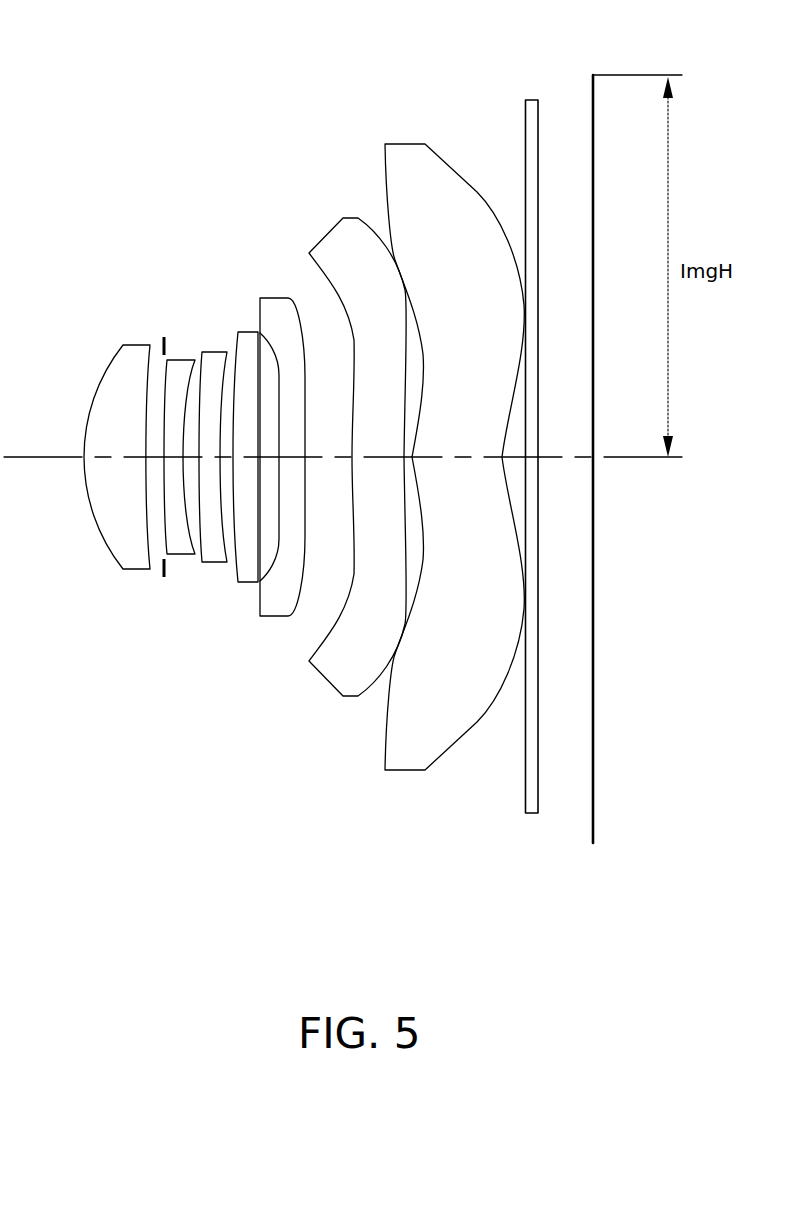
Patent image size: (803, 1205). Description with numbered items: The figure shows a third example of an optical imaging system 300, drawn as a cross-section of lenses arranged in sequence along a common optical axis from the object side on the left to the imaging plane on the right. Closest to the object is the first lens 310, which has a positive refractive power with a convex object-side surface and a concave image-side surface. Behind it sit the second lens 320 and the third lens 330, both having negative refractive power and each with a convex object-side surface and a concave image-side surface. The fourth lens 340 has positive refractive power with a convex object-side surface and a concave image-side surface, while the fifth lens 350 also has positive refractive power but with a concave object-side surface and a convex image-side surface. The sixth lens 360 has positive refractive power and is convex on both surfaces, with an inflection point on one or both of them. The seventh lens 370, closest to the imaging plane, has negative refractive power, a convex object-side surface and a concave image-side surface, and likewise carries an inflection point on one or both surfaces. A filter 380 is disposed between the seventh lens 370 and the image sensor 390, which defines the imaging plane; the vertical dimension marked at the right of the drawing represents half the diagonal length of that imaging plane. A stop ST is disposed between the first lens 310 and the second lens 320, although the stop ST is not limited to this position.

The optical imaging system 300 is at (140, 205).
The first lens 310 is at (117, 552).
The second lens 320 is at (178, 553).
The third lens 330 is at (213, 557).
The fourth lens 340 is at (252, 582).
The fifth lens 350 is at (278, 608).
The sixth lens 360 is at (328, 672).
The seventh lens 370 is at (402, 765).
The filter 380 is at (537, 815).
The image sensor 390 is at (593, 843).
The stop ST is at (163, 337).